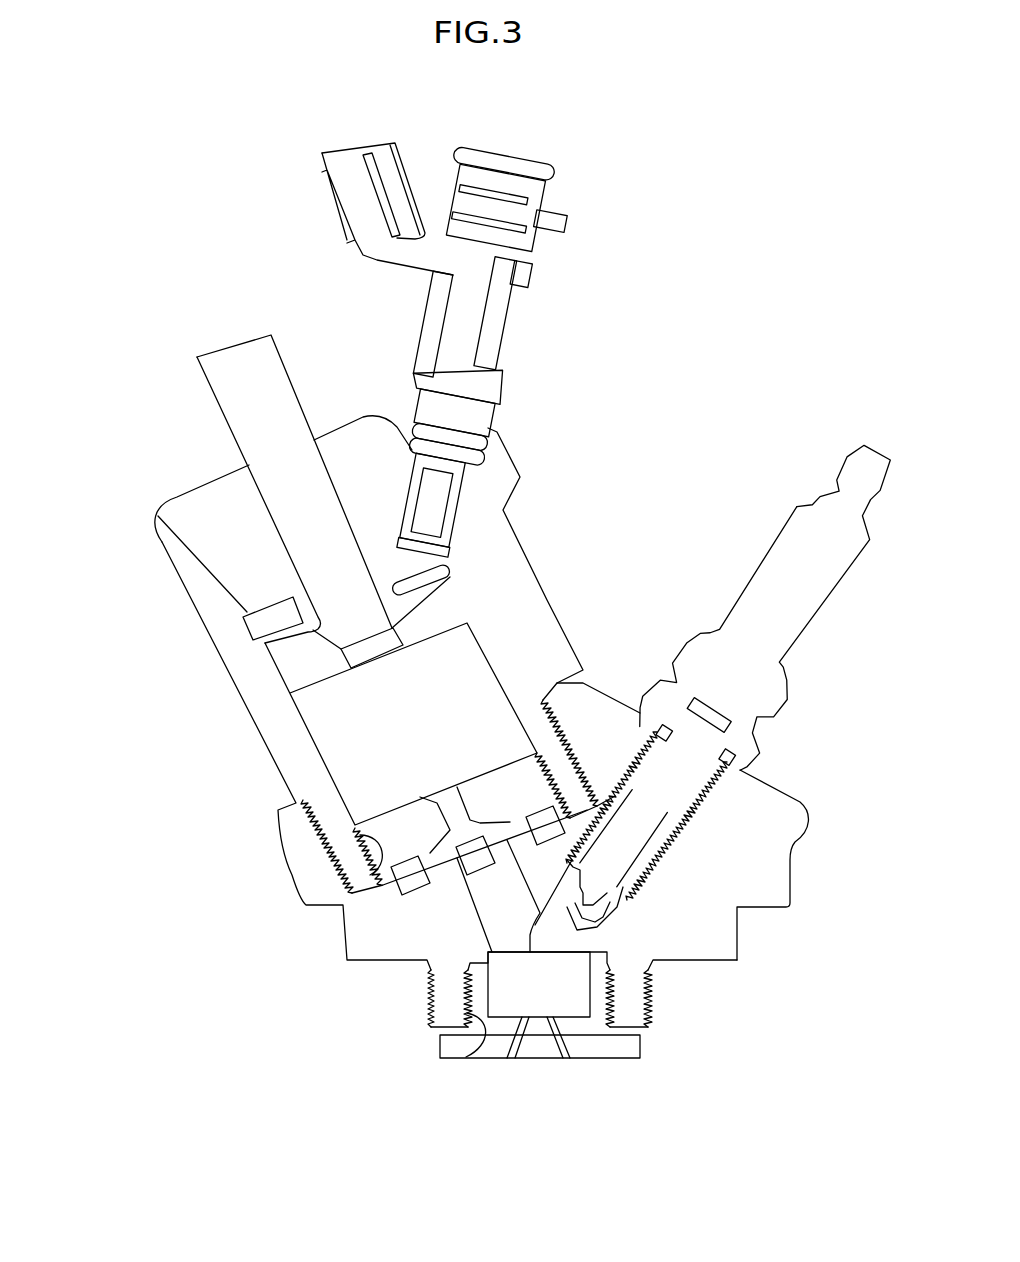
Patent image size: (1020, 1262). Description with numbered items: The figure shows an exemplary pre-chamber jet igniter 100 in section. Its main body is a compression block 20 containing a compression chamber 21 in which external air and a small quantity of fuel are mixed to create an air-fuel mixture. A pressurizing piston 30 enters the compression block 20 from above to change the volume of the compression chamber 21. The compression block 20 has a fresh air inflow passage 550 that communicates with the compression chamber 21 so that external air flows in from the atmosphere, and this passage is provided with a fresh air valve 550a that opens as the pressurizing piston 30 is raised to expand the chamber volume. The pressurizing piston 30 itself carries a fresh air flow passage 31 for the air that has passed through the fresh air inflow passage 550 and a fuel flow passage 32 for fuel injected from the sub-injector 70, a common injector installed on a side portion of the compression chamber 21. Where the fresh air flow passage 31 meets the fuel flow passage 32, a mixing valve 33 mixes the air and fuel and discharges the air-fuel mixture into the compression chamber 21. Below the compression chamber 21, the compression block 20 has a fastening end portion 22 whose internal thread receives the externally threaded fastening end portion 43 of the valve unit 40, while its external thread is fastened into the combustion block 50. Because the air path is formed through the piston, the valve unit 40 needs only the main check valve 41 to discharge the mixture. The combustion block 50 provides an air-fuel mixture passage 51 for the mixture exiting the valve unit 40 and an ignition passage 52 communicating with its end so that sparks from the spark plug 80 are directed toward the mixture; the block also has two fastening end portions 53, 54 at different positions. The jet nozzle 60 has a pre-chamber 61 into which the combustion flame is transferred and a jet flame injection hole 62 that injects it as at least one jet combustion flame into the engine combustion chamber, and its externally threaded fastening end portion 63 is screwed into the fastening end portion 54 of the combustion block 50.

The pre-chamber jet igniter 100 is at (263, 190).
The compression block 20 is at (210, 645).
The compression chamber 21 is at (347, 733).
The fastening end portion 22 is at (347, 840).
The pressurizing piston 30 is at (233, 362).
The fresh air flow passage 31 is at (330, 640).
The fuel flow passage 32 is at (405, 610).
The mixing valve 33 is at (377, 650).
The valve unit 40 is at (410, 838).
The main check valve 41 is at (462, 820).
The fastening end portion 43 is at (380, 843).
The combustion block 50 is at (763, 820).
The air-fuel mixture passage 51 is at (495, 892).
The ignition passage 52 is at (572, 933).
The fastening end portion 53 is at (577, 760).
The fastening end portion 54 is at (630, 990).
The jet nozzle 60 is at (593, 1042).
The pre-chamber 61 is at (507, 1000).
The jet flame injection hole 62 is at (513, 1045).
The fastening end portion 63 is at (485, 1038).
The sub-injector 70 is at (495, 316).
The spark plug 80 is at (805, 540).
The fresh air inflow passage 550 is at (173, 518).
The fresh air valve 550a is at (262, 605).